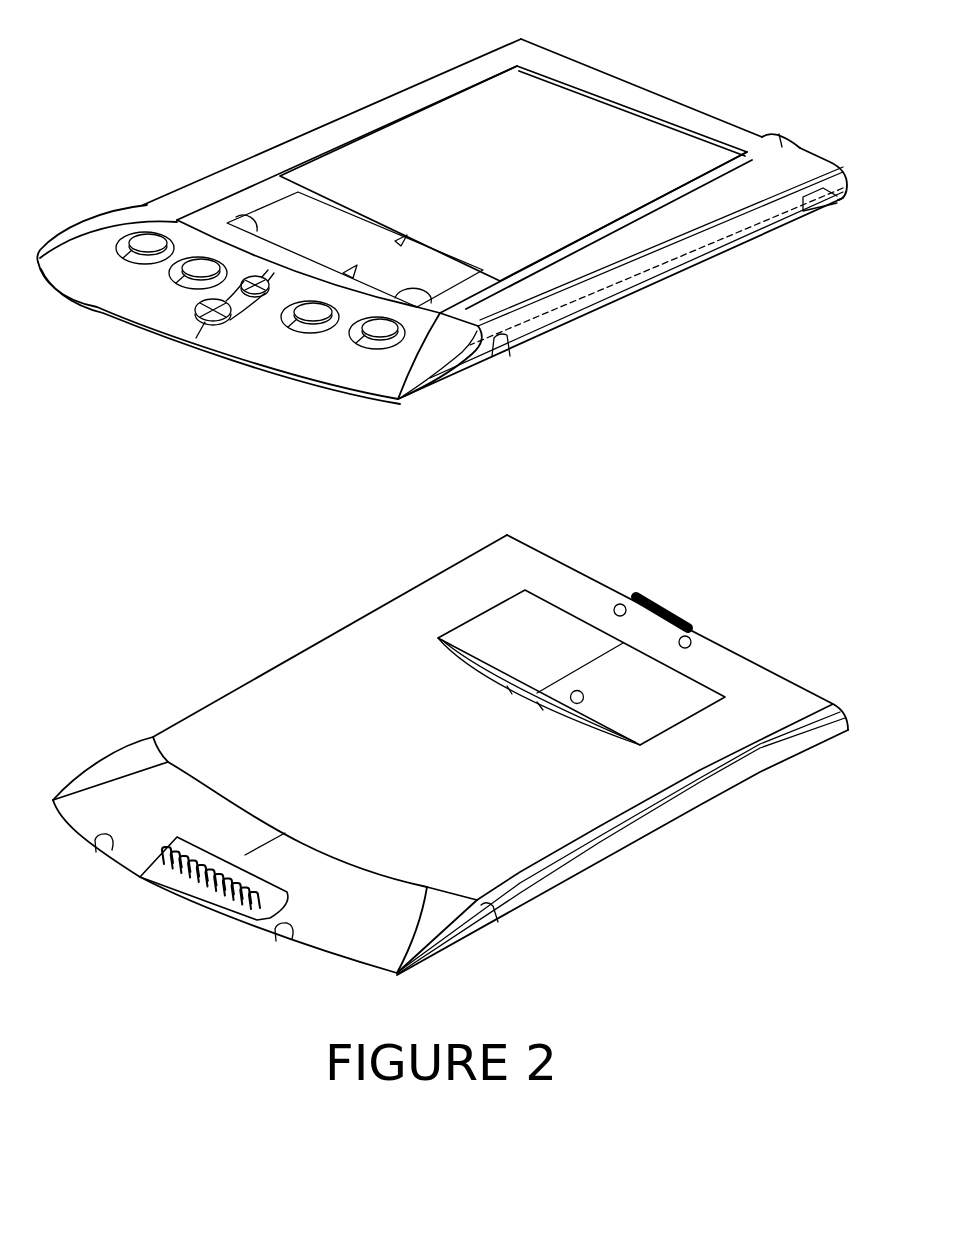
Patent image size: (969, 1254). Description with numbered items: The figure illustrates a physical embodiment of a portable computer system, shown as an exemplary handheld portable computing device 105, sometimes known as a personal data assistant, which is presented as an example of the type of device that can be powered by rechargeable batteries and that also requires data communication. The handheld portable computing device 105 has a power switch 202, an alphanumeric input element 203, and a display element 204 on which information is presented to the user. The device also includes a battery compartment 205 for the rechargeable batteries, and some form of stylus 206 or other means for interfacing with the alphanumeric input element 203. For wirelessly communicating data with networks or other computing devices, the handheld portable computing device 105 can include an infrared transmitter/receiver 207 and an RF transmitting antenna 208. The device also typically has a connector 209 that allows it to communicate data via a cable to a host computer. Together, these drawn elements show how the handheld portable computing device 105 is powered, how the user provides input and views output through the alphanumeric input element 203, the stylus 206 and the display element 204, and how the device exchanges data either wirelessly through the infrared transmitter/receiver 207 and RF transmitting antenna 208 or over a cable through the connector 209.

The handheld portable computing device 105 is at (380, 622).
The power switch 202 is at (774, 131).
The alphanumeric input element 203 is at (320, 250).
The display element 204 is at (525, 190).
The battery compartment 205 is at (665, 701).
The stylus 206 is at (683, 250).
The infrared transmitter/receiver 207 is at (660, 597).
The RF transmitting antenna 208 is at (735, 777).
The connector 209 is at (170, 885).